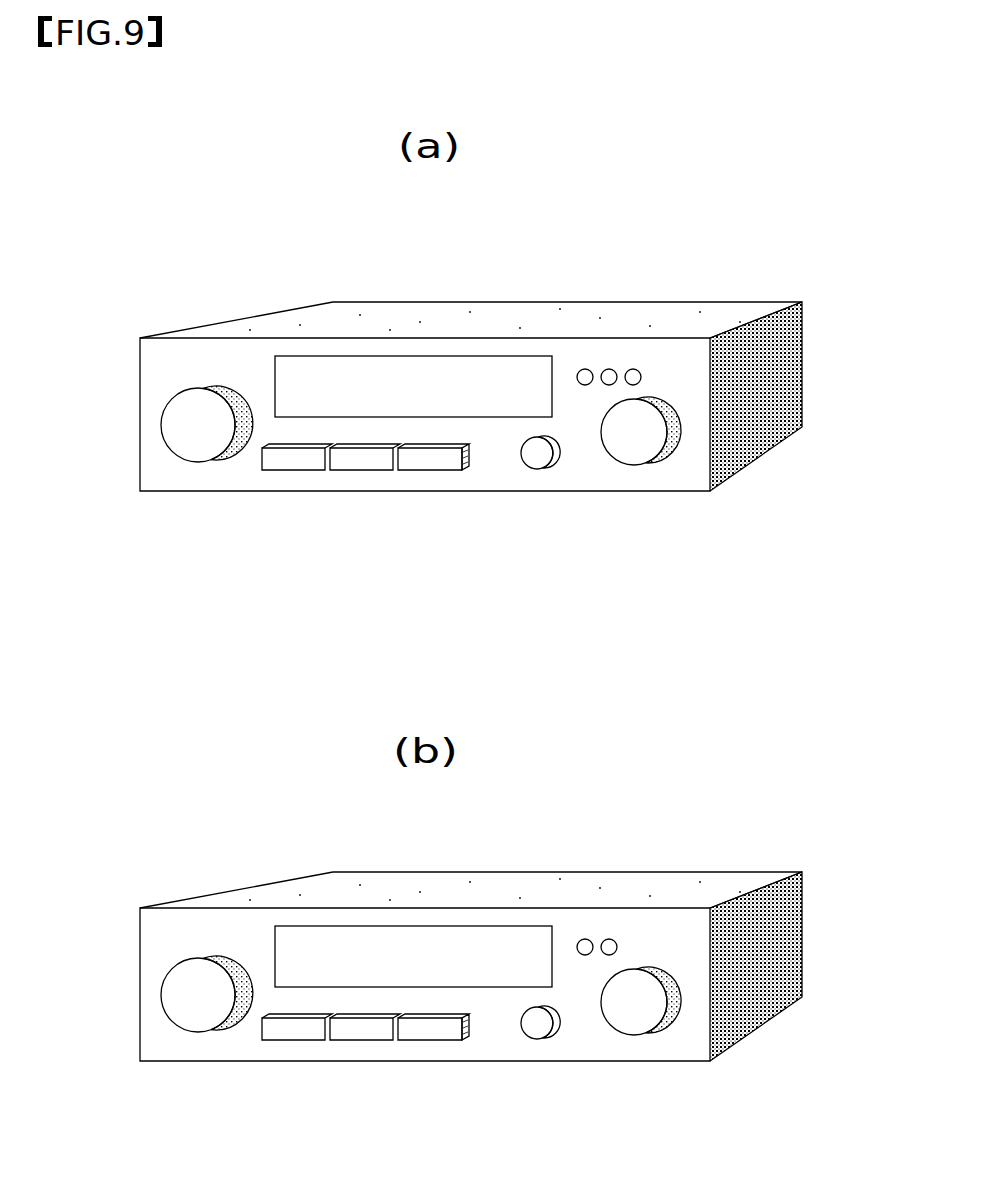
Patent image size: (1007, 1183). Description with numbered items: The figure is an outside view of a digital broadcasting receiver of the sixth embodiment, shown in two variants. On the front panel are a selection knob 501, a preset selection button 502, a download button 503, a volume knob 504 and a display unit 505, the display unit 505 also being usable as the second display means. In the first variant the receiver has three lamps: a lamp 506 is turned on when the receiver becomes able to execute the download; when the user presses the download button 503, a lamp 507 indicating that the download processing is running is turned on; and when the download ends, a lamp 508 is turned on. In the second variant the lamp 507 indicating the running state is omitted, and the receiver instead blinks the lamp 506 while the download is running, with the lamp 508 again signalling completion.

The selection knob 501 is at (200, 443).
The preset selection button 502 is at (360, 462).
The download button 503 is at (538, 462).
The volume knob 504 is at (634, 442).
The display unit 505 is at (470, 377).
The lamp 506 is at (585, 368).
The lamp 507 is at (610, 368).
The lamp 508 is at (633, 368).